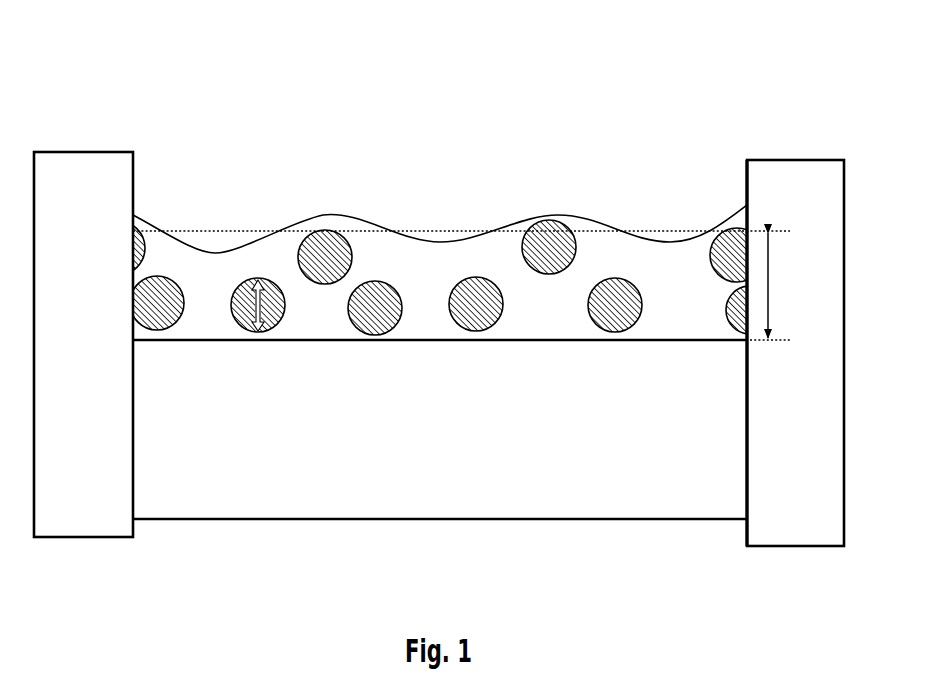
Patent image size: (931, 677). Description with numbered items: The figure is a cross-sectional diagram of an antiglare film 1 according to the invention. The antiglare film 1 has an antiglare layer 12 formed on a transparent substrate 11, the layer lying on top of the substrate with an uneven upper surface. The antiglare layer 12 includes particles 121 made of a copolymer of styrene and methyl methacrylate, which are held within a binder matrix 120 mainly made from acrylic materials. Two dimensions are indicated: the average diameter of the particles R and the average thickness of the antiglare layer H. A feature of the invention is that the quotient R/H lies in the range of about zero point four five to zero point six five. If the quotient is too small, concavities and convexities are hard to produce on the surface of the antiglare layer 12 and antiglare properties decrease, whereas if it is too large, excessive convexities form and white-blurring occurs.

The antiglare film 1 is at (543, 125).
The transparent substrate 11 is at (752, 343).
The antiglare layer 12 is at (813, 205).
The binder matrix 120 is at (637, 258).
The particles 121 is at (325, 248).
The average thickness of the antiglare layer H is at (467, 285).
The average diameter of the particles R is at (240, 290).